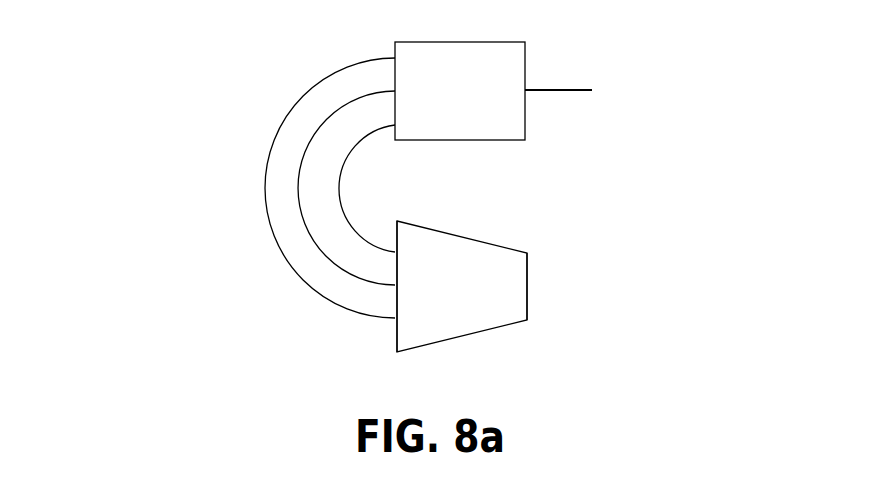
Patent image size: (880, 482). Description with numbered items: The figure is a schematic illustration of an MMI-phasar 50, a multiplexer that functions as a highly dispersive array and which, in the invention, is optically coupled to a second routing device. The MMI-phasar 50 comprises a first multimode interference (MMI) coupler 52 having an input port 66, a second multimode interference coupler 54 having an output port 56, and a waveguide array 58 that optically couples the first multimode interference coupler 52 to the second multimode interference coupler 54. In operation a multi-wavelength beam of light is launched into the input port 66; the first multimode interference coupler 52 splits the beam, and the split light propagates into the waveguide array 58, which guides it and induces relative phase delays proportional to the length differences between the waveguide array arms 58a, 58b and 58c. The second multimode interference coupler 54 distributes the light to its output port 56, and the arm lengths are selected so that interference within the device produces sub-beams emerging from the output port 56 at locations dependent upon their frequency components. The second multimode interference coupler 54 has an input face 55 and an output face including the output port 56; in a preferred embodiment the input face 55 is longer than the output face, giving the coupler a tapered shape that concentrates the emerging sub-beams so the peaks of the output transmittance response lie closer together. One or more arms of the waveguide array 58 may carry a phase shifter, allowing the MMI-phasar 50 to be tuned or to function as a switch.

The MMI-phasar 50 is at (178, 66).
The first multimode interference (MMI) coupler 52 is at (443, 42).
The second multimode interference coupler 54 is at (470, 336).
The input face 55 is at (395, 303).
The output port 56 is at (527, 288).
The waveguide array 58 is at (230, 210).
The waveguide array arm 58a is at (312, 88).
The waveguide array arm 58b is at (303, 153).
The waveguide array arm 58c is at (335, 210).
The input port 66 is at (562, 90).